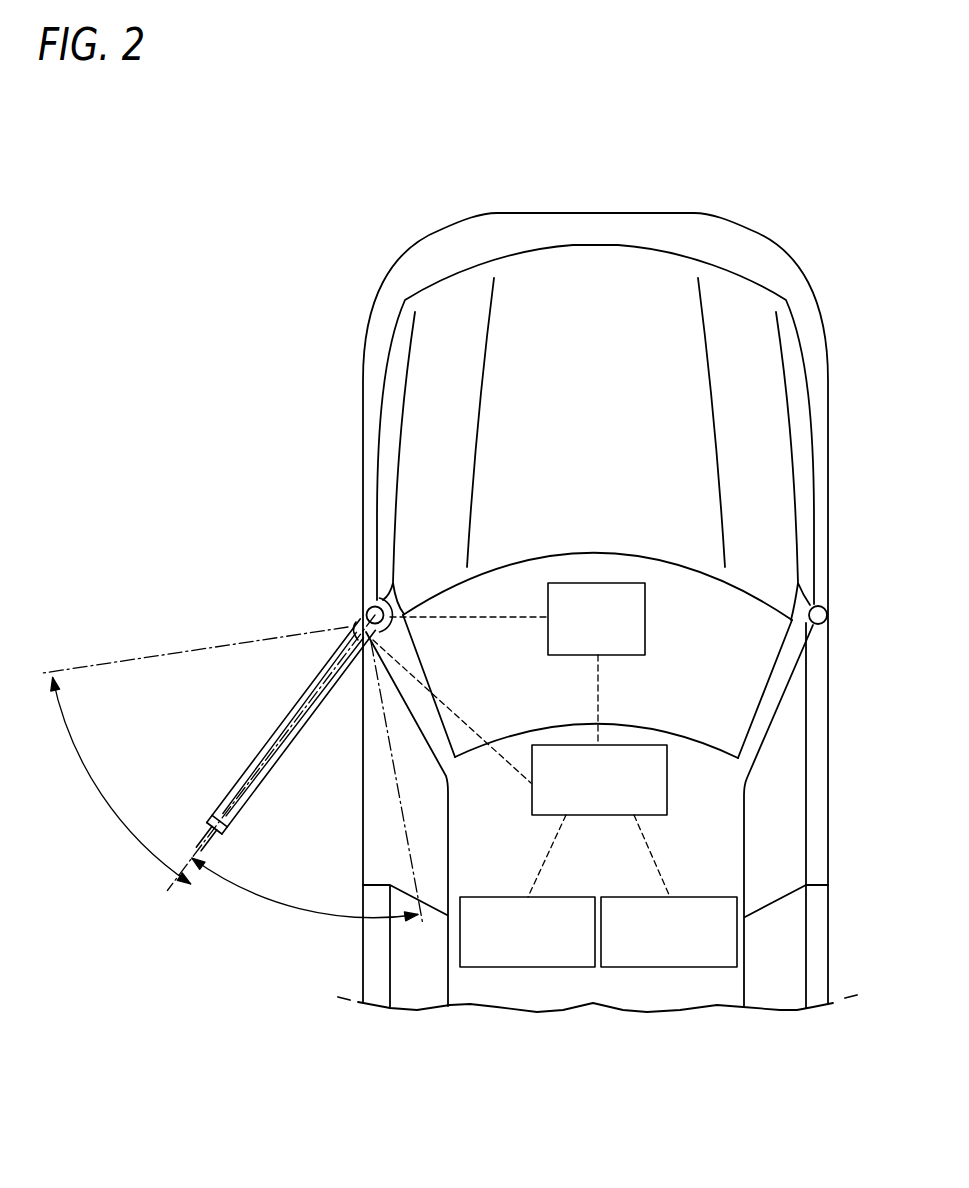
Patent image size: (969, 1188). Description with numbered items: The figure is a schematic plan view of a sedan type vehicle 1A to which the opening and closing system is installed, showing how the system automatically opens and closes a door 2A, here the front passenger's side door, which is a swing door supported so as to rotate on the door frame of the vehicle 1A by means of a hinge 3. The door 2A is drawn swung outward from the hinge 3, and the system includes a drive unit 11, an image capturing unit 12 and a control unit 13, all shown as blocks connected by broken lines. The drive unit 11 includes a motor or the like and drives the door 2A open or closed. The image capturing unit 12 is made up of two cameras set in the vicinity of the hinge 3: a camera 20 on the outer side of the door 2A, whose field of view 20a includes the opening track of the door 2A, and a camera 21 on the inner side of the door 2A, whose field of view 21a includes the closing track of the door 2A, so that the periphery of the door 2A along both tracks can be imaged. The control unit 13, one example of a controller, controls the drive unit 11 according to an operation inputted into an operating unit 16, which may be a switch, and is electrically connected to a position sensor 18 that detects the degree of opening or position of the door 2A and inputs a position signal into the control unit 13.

The vehicle 1A is at (760, 233).
The door 2A is at (272, 741).
The hinge 3 is at (366, 610).
The drive unit 11 is at (517, 619).
The image capturing unit 12 is at (279, 690).
The control unit 13 is at (520, 727).
The operating unit 16 is at (527, 891).
The position sensor 18 is at (669, 891).
The camera 20 is at (356, 622).
The field of view 20a is at (104, 800).
The camera 21 is at (378, 597).
The field of view 21a is at (290, 907).